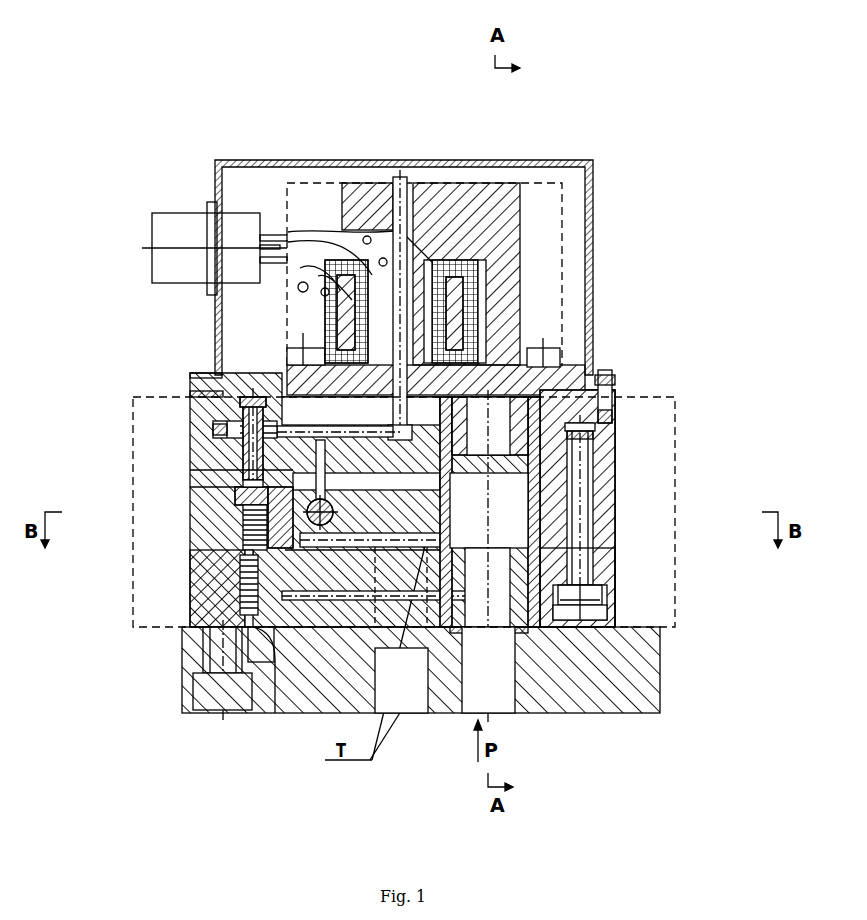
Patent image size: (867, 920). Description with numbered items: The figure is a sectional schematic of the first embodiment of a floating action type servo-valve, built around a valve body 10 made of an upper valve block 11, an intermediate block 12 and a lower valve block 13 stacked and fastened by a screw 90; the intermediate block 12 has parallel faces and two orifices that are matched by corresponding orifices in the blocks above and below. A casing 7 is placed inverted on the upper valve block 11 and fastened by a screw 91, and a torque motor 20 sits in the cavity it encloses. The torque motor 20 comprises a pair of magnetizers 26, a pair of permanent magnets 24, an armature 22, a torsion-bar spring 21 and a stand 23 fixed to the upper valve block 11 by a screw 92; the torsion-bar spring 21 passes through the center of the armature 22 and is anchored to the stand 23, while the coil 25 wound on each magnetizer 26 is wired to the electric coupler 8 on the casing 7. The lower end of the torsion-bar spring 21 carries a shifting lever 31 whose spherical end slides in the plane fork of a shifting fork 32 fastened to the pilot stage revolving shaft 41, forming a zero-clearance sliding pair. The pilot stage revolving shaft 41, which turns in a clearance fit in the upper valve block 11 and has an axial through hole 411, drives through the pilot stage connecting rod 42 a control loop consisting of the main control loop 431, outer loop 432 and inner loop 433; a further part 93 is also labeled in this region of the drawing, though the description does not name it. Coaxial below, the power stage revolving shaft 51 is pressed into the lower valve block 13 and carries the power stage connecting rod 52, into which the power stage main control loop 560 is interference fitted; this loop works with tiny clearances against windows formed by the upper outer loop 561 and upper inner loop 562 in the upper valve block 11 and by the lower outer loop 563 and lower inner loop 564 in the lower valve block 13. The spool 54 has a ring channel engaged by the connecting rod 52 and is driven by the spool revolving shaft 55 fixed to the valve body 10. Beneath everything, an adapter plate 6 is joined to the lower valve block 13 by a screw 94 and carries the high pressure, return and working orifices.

The adapter plate 6 is at (613, 665).
The casing 7 is at (222, 193).
The electric coupler 8 is at (188, 223).
The valve body 10 is at (653, 603).
The upper valve block 11 is at (603, 450).
The intermediate block 12 is at (608, 535).
The lower valve block 13 is at (600, 625).
The torque motor 20 is at (297, 208).
The torsion-bar spring 21 is at (355, 222).
The armature 22 is at (407, 268).
The stand 23 is at (438, 203).
The permanent magnet 24 is at (425, 272).
The coil 25 is at (440, 260).
The magnetizer 26 is at (502, 238).
The shifting lever 31 is at (235, 463).
The shifting fork 32 is at (285, 425).
The pilot stage revolving shaft 41 is at (250, 418).
The pilot stage connecting rod 42 is at (230, 466).
The power stage revolving shaft 51 is at (258, 660).
The power stage connecting rod 52 is at (270, 495).
The spool 54 is at (262, 545).
The spool revolving shaft 55 is at (250, 522).
The screw 90 is at (597, 605).
The screw 91 is at (606, 380).
The screw 92 is at (550, 360).
The nozzle 93 is at (215, 428).
The screw 94 is at (218, 693).
The through hole 411 is at (247, 395).
The pilot stage main control loop 431 is at (250, 485).
The pilot stage outer loop 432 is at (225, 690).
The pilot stage inner loop 433 is at (232, 650).
The power stage main control loop 560 is at (582, 515).
The power stage upper outer loop 561 is at (578, 430).
The power stage upper inner loop 562 is at (592, 424).
The power stage lower outer loop 563 is at (600, 595).
The power stage lower inner loop 564 is at (608, 607).